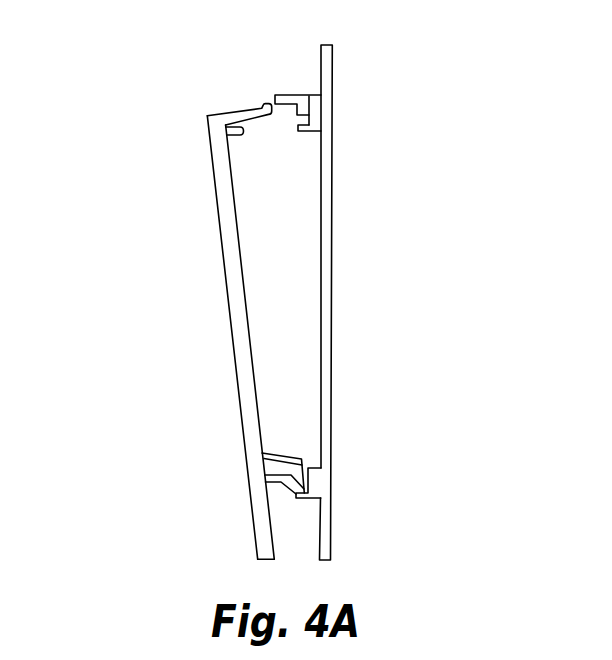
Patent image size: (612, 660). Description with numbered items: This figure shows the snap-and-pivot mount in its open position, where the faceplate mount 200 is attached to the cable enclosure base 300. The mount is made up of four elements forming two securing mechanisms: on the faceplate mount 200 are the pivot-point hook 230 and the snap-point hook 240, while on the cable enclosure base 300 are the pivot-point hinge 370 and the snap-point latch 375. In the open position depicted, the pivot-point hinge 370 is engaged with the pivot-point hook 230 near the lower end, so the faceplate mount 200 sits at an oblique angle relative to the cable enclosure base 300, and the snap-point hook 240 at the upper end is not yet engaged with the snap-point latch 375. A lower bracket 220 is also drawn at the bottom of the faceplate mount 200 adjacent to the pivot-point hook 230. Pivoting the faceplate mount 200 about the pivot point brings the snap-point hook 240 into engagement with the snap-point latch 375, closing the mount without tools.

The faceplate mount 200 is at (219, 300).
The cable enclosure base 300 is at (358, 263).
The snap-point hook 240 is at (233, 113).
The snap-point latch 375 is at (287, 93).
The lower bracket 220 is at (300, 458).
The pivot-point hook 230 is at (281, 477).
The pivot-point hinge 370 is at (300, 498).